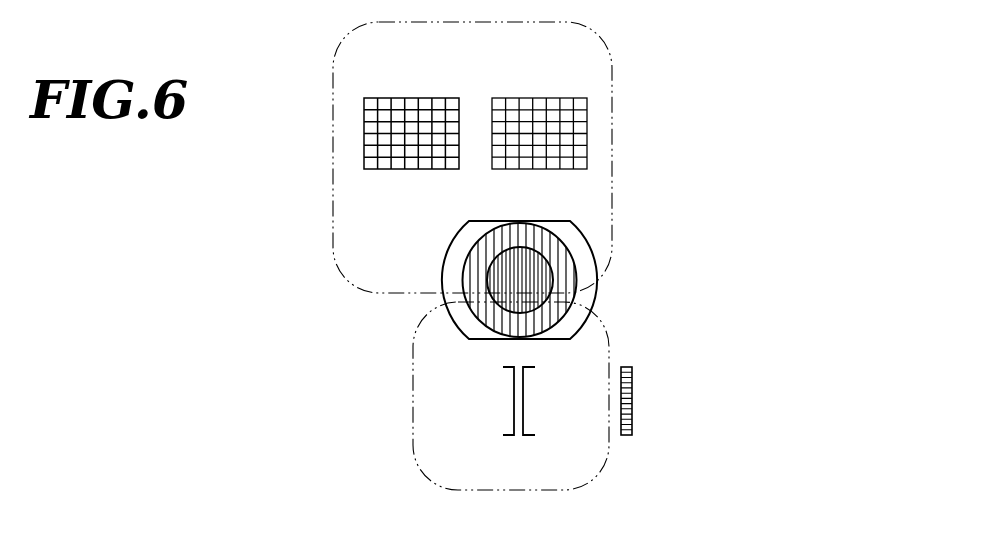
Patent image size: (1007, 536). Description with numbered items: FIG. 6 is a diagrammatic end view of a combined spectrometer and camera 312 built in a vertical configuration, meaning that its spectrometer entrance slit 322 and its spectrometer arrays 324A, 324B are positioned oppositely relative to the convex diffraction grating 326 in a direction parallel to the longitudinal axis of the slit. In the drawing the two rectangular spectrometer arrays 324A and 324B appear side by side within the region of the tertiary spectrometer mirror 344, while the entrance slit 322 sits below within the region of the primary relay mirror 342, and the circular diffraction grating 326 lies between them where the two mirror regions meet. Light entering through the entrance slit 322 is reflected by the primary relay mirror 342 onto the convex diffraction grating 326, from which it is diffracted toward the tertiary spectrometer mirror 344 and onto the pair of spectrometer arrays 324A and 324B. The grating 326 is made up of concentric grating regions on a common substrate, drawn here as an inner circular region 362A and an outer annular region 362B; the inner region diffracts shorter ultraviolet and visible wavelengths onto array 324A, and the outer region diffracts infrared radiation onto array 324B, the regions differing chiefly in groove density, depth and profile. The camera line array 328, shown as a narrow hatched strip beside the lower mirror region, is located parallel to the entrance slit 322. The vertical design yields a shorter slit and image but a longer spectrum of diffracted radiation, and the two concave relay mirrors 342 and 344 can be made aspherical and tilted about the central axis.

The combined spectrometer and camera 312 is at (660, 150).
The spectrometer entrance slit 322 is at (514, 414).
The spectrometer array 324A is at (587, 130).
The spectrometer array 324B is at (410, 98).
The convex diffraction grating 326 is at (583, 220).
The camera line array 328 is at (632, 393).
The primary relay mirror 342 is at (413, 393).
The tertiary spectrometer mirror 344 is at (611, 65).
The inner circular electrode 362A is at (532, 276).
The outer circular electrode 362B is at (552, 247).